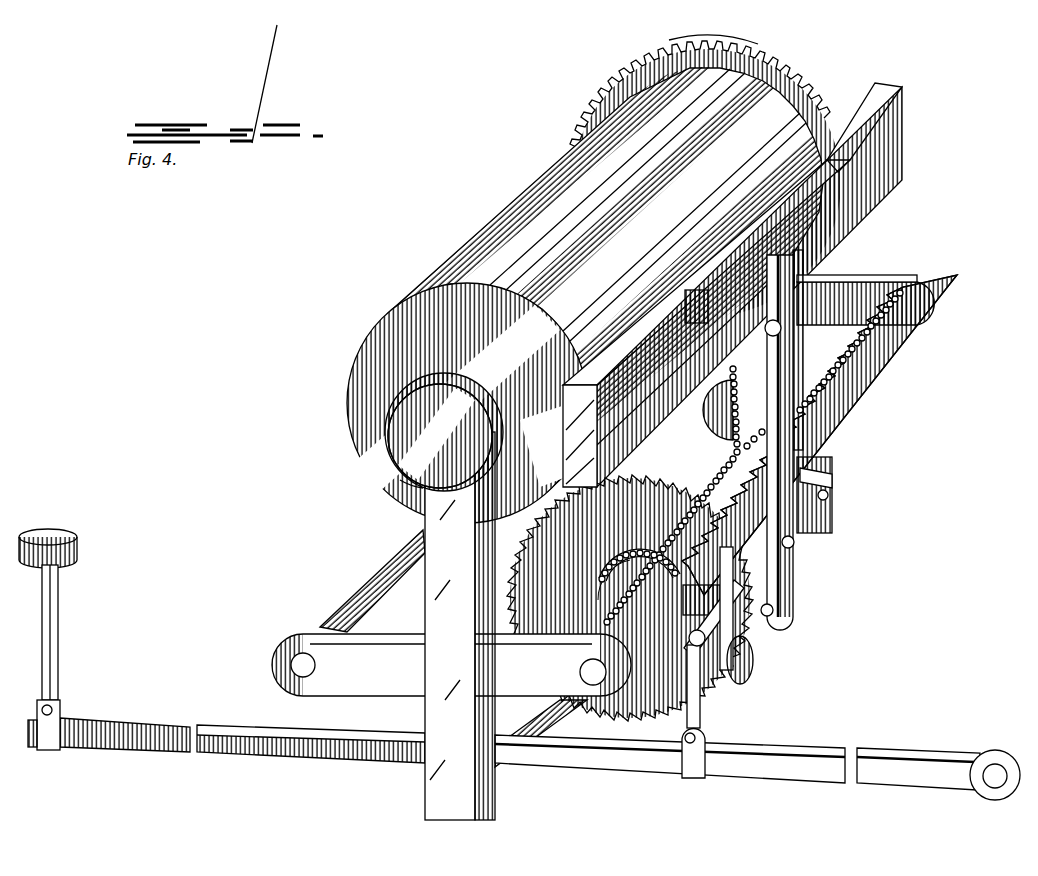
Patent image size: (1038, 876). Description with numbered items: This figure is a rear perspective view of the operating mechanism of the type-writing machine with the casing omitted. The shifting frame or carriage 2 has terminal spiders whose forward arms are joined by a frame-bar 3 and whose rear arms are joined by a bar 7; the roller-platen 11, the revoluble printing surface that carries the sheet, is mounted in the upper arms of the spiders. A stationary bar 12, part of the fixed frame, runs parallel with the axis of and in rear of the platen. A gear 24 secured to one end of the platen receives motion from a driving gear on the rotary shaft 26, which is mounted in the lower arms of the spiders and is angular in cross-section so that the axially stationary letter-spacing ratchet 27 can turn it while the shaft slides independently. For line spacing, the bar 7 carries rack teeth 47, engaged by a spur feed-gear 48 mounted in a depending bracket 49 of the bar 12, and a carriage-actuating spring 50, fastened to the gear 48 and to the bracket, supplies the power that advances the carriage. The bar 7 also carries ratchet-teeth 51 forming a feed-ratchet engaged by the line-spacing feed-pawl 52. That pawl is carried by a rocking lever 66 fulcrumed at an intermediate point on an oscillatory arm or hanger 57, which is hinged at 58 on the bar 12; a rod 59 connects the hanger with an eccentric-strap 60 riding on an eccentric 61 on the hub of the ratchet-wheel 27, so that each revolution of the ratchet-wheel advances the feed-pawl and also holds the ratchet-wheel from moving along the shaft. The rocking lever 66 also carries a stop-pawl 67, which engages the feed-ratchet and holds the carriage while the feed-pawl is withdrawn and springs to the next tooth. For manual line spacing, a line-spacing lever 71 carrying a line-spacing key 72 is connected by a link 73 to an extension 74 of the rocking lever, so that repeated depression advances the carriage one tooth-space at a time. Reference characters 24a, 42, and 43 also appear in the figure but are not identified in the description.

The shifting frame or carriage 2 is at (383, 676).
The frame-bar 3 is at (353, 605).
The bar 7 is at (880, 358).
The roller-platen 11 is at (540, 192).
The stationary bar 12 is at (880, 96).
The gear 24 is at (608, 92).
The guard plate 24a is at (738, 47).
The rotary shaft 26 is at (512, 768).
The letter-spacing ratchet 27 is at (663, 490).
The bearing boss 42 is at (400, 508).
The shaft hub 43 is at (393, 437).
The rack teeth 47 is at (840, 367).
The spur feed-gear 48 is at (733, 442).
The depending bracket 49 is at (762, 371).
The carriage-actuating spring 50 is at (710, 413).
The ratchet-teeth 51 is at (845, 403).
The line-spacing feed-pawl 52 is at (752, 655).
The oscillatory arm or hanger 57 is at (805, 437).
The hinge 58 is at (782, 328).
The rod 59 is at (775, 612).
The eccentric-strap 60 is at (641, 551).
The eccentric 61 is at (600, 566).
The rocking lever 66 is at (823, 518).
The stop-pawl 67 is at (800, 464).
The line-spacing lever 71 is at (773, 752).
The line-spacing key 72 is at (80, 548).
The link 73 is at (702, 722).
The extension 74 is at (734, 662).